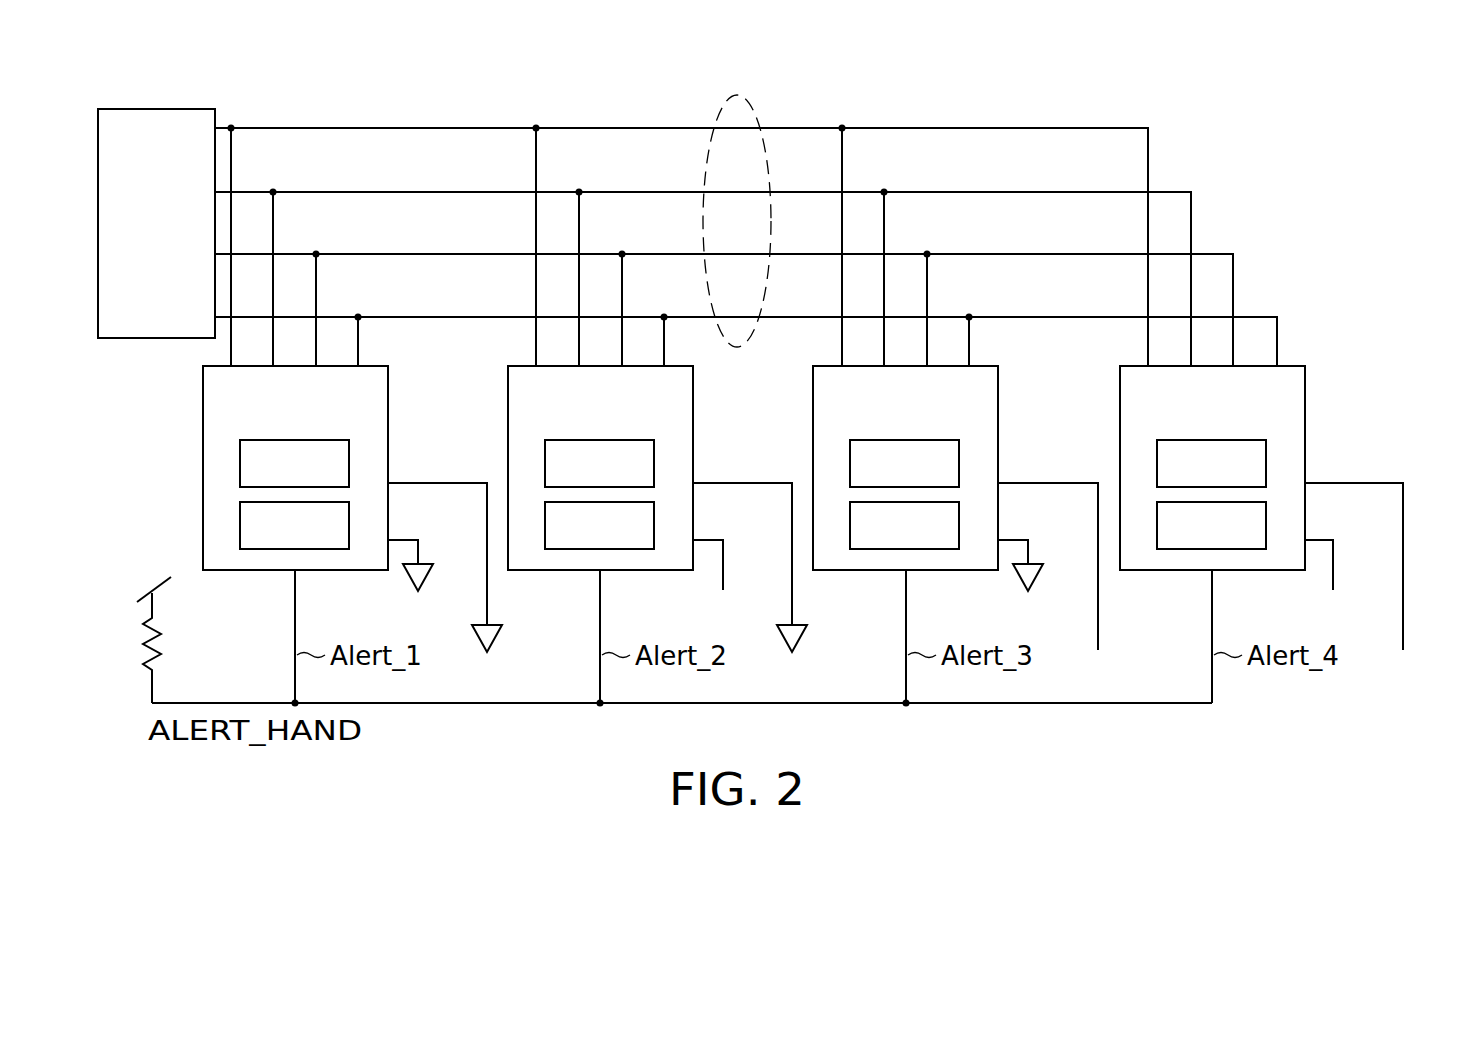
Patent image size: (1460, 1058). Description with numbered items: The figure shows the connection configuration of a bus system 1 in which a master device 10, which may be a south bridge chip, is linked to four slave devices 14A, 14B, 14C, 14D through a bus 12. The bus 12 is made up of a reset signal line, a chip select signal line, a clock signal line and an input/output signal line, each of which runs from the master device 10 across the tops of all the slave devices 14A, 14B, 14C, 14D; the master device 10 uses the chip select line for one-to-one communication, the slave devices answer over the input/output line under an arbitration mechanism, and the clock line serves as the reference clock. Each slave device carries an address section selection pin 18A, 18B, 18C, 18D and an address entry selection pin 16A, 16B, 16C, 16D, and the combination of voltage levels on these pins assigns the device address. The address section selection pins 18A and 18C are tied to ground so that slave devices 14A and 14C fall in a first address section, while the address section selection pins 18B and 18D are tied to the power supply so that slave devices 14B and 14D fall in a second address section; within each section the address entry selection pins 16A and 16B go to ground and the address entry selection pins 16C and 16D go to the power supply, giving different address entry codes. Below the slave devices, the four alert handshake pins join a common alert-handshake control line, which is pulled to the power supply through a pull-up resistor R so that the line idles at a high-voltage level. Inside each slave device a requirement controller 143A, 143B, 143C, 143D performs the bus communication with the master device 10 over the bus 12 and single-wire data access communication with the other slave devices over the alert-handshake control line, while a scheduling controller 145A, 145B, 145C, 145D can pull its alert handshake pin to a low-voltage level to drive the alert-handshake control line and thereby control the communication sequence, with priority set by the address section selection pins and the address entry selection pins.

The bus system 1 is at (1334, 95).
The master device 10 is at (98, 110).
The bus 12 is at (735, 97).
The slave device 14A is at (390, 405).
The slave device 14B is at (695, 405).
The slave device 14C is at (1000, 405).
The slave device 14D is at (1307, 405).
The address entry selection pin 16A is at (400, 483).
The address entry selection pin 16B is at (705, 483).
The address entry selection pin 16C is at (1010, 483).
The address entry selection pin 16D is at (1317, 483).
The address section selection pin 18A is at (400, 540).
The address section selection pin 18B is at (705, 540).
The address section selection pin 18C is at (1010, 540).
The address section selection pin 18D is at (1317, 540).
The requirement controller 143A is at (333, 477).
The requirement controller 143B is at (638, 477).
The requirement controller 143C is at (943, 477).
The requirement controller 143D is at (1250, 477).
The scheduling controller 145A is at (333, 539).
The scheduling controller 145B is at (638, 539).
The scheduling controller 145C is at (943, 539).
The scheduling controller 145D is at (1250, 539).
The pull-up resistor R is at (163, 645).